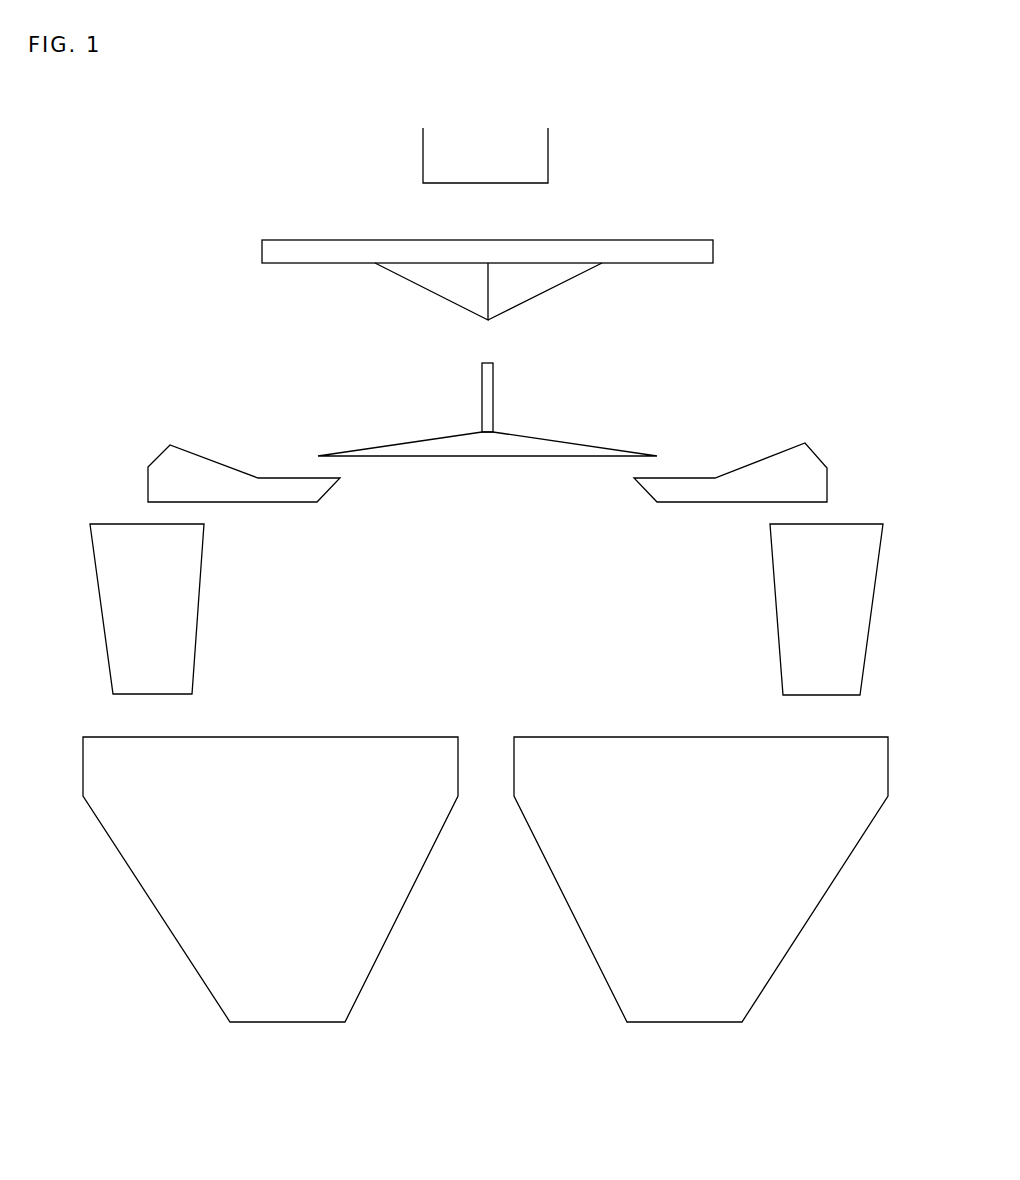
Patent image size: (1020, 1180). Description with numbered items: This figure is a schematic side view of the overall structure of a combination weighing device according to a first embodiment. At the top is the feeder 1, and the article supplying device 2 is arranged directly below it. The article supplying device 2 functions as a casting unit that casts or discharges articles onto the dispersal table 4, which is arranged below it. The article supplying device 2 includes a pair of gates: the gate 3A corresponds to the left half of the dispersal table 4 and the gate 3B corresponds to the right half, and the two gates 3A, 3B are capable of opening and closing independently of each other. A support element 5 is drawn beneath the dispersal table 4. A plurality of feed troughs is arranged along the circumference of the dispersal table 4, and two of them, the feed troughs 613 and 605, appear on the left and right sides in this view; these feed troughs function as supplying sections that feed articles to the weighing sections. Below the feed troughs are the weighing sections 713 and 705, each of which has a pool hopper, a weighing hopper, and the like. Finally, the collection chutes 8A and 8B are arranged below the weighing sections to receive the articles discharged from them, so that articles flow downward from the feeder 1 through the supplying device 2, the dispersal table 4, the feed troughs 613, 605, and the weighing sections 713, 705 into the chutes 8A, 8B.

The feeder 1 is at (537, 150).
The article supplying device 2 is at (710, 248).
The gate 3A is at (425, 275).
The gate 3B is at (538, 275).
The dispersal table 4 is at (527, 445).
The support shaft 5 is at (482, 410).
The feed trough 613 is at (220, 478).
The feed trough 605 is at (763, 478).
The weighing section 713 is at (175, 592).
The weighing section 705 is at (797, 570).
The collection chute 8A is at (310, 750).
The collection chute 8B is at (638, 763).